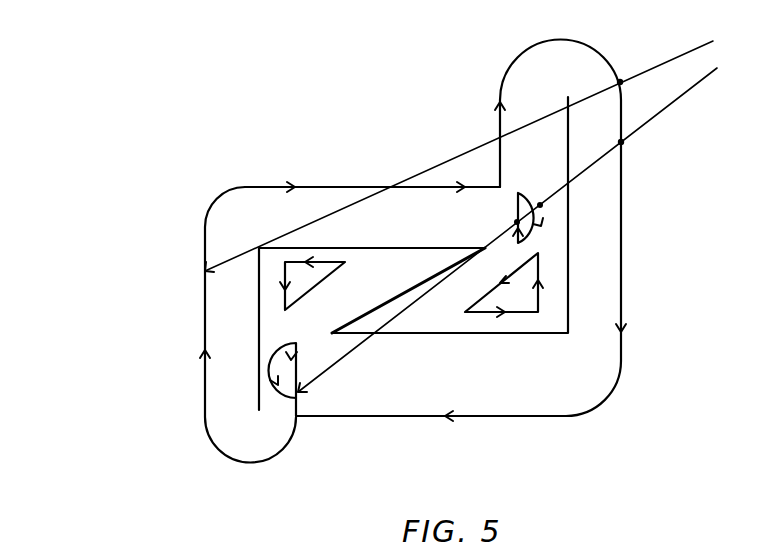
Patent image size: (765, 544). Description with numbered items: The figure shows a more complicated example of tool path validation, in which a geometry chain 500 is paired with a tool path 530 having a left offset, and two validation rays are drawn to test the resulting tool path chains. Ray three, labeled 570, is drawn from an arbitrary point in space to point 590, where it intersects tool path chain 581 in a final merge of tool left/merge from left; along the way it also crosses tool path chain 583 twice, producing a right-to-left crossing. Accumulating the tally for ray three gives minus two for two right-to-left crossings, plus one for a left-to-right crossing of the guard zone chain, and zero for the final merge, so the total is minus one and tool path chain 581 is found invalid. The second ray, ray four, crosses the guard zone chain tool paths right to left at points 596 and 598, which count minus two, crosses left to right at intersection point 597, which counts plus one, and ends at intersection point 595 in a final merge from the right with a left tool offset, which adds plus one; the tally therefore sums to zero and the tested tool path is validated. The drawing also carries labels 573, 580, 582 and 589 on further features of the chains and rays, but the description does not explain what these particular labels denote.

The geometry chain 500 is at (365, 247).
The tool path 530 is at (540, 42).
The ray 3 570 is at (640, 128).
The intersection point of ray 3 573 is at (621, 142).
The first prism 580 is at (335, 262).
The tool path chain 581 is at (288, 352).
The second prism 582 is at (540, 298).
The tool path chain 583 is at (518, 210).
The right side of optical loop 589 is at (621, 232).
The point 590 is at (300, 395).
The intersection point 595 is at (205, 272).
The point 596 is at (352, 186).
The intersection point 597 is at (498, 140).
The point 598 is at (620, 82).